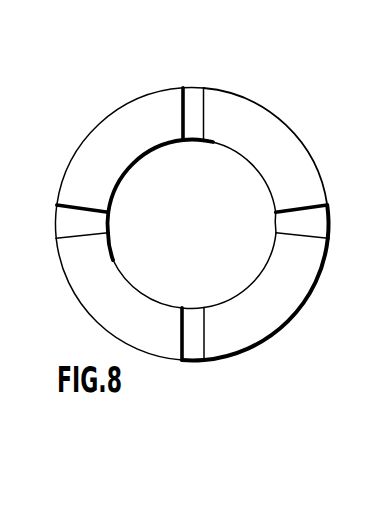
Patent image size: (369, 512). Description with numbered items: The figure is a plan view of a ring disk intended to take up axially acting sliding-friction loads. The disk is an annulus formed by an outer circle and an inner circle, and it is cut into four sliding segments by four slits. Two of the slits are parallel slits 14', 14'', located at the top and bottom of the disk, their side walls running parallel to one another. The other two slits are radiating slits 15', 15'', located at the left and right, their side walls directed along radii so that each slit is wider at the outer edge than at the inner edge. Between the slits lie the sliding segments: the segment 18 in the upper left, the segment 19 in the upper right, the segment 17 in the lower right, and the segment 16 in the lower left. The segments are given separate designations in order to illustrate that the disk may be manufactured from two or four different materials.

The parallel slit 14' is at (200, 95).
The parallel slit 14'' is at (195, 359).
The radiating slit 15' is at (107, 210).
The radiating slit 15'' is at (278, 221).
The ring segment (lower left) 16 is at (88, 302).
The sliding segment 17 is at (288, 300).
The sliding segment 18 is at (102, 133).
The sliding segment 19 is at (278, 142).